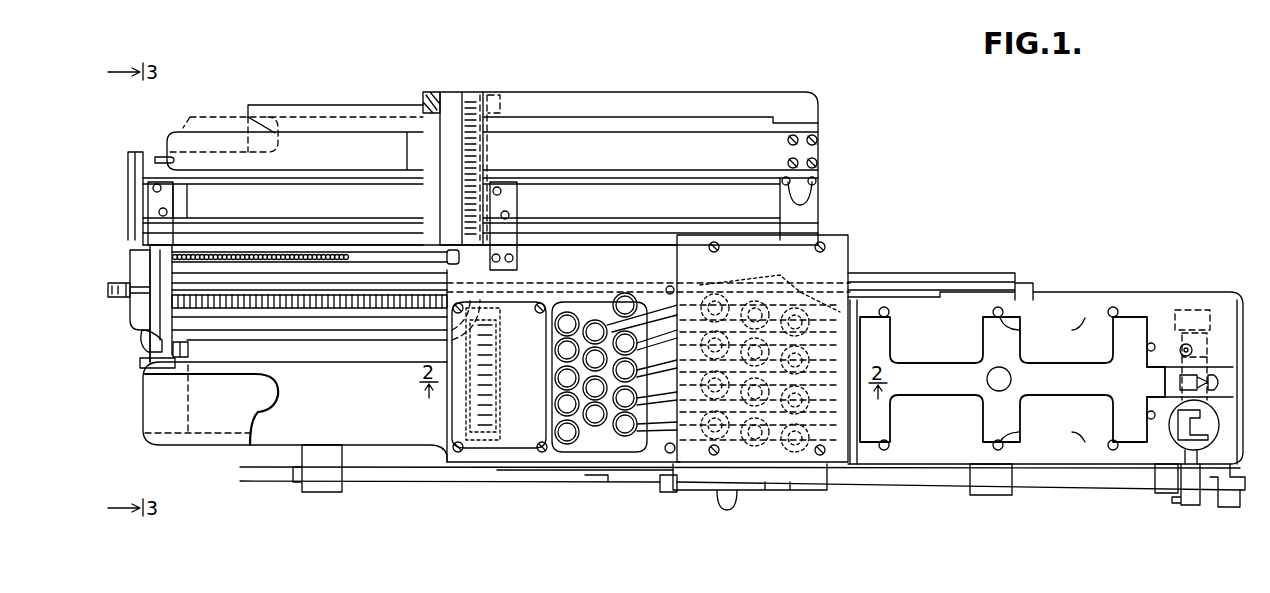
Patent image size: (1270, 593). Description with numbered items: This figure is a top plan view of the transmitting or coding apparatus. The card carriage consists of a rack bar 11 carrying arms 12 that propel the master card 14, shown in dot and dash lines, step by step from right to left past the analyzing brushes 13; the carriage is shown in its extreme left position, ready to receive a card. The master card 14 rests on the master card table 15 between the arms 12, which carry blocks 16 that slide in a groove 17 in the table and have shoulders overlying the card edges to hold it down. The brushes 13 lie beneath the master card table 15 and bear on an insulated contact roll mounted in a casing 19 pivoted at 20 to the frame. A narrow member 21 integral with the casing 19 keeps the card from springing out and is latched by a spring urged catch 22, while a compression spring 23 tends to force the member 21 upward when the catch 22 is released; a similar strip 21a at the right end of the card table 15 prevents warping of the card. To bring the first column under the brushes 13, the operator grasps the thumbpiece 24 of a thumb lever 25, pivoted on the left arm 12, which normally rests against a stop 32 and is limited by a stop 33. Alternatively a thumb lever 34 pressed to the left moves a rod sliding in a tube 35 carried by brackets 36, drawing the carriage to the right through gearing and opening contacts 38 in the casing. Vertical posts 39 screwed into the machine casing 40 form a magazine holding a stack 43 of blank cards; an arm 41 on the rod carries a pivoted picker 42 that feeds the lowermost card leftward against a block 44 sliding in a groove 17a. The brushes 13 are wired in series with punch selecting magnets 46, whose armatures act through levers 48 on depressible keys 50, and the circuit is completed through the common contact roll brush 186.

The rack bar 11 is at (365, 282).
The arms 12 is at (160, 240).
The analyzing brushes 13 is at (482, 168).
The master card 14 is at (222, 116).
The master card table 15 is at (343, 178).
The blocks 16 is at (178, 198).
The groove 17 is at (641, 187).
The groove 17a is at (333, 362).
The casing 19 is at (453, 97).
The pivot 20 is at (496, 99).
The narrow member 21 is at (370, 140).
The strip 21a is at (690, 150).
The spring urged catch 22 is at (165, 157).
The compression spring 23 is at (431, 92).
The thumbpiece 24 is at (144, 345).
The thumb lever 25 is at (128, 309).
The stop 32 is at (180, 318).
The stop 33 is at (205, 310).
The thumb lever 34 is at (1226, 492).
The tube 35 is at (400, 478).
The brackets 36 is at (322, 492).
The contacts 38 is at (1195, 466).
The vertical posts 39 is at (1090, 318).
The machine casing 40 is at (1158, 296).
The arm 41 is at (1203, 413).
The picker 42 is at (1172, 380).
The stack 43 is at (460, 407).
The block 44 is at (230, 352).
The punch selecting magnets 46 is at (768, 300).
The lever 48 is at (656, 292).
The depressible keys 50 is at (628, 441).
The common contact roll brush 186 is at (484, 92).